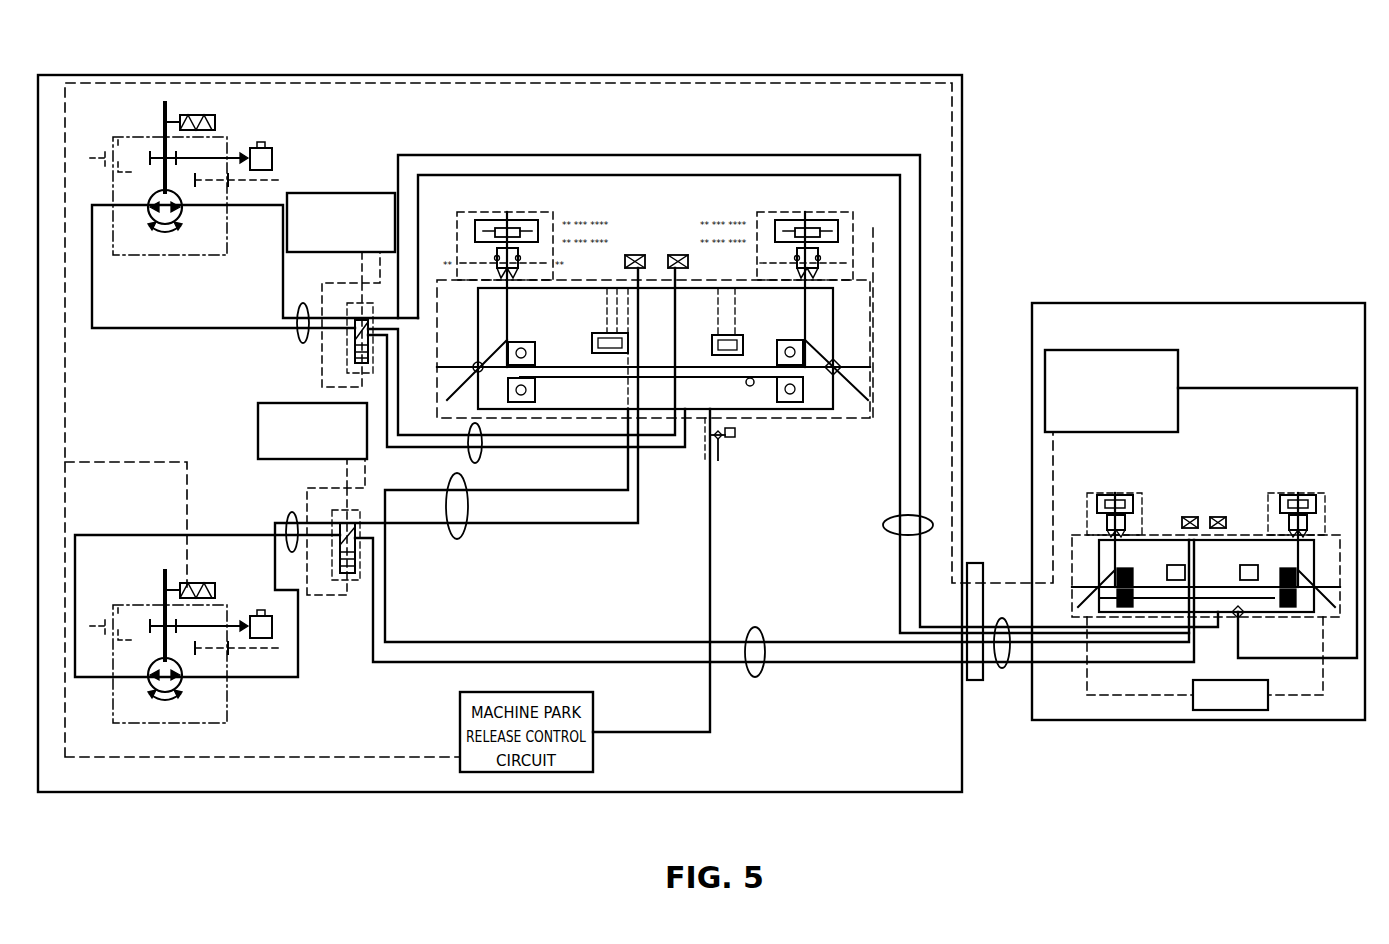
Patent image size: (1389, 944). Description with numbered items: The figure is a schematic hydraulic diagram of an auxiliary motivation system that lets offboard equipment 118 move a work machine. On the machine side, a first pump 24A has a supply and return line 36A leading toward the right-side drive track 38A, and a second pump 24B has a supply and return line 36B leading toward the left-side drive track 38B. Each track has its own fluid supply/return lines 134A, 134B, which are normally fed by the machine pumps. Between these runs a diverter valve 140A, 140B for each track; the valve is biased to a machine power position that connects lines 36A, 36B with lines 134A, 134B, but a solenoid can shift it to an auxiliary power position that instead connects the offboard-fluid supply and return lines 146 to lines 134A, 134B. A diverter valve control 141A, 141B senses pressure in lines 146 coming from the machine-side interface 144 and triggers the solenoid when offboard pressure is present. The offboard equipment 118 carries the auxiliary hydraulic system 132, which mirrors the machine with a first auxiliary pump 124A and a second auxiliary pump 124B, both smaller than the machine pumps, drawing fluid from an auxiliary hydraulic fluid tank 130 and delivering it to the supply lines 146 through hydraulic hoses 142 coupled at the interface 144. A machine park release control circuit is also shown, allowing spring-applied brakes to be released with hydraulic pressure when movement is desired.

The right-side drive track 38A is at (236, 112).
The left-side drive track 38B is at (84, 532).
The first pump 24A is at (810, 205).
The second pump 24B is at (480, 205).
The diverter valve control 141A is at (330, 193).
The diverter valve control 141B is at (258, 431).
The diverter valve 140A is at (328, 272).
The diverter valve 140B is at (333, 618).
The fluid supply/return lines 134A is at (297, 328).
The fluid supply/return lines 134B is at (287, 520).
The supply and return line 36A is at (482, 449).
The supply and return line 36B is at (468, 528).
The offboard-fluid supply and return lines 146 is at (886, 525).
The machine-side interface 144 is at (973, 563).
The hydraulic hoses 142 is at (1002, 668).
The offboard equipment 118 is at (1198, 507).
The first auxiliary pump 124A is at (1300, 493).
The second auxiliary pump 124B is at (1118, 493).
The auxiliary hydraulic fluid tank 130 is at (1232, 712).
The auxiliary hydraulic system 132 is at (1100, 748).